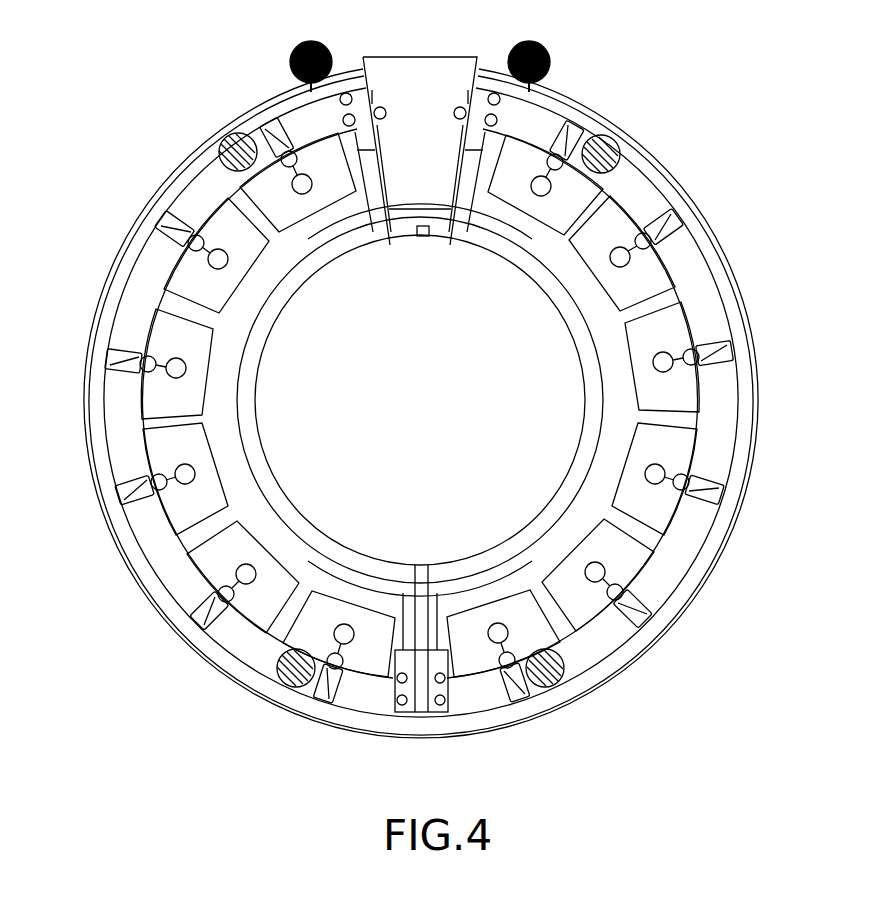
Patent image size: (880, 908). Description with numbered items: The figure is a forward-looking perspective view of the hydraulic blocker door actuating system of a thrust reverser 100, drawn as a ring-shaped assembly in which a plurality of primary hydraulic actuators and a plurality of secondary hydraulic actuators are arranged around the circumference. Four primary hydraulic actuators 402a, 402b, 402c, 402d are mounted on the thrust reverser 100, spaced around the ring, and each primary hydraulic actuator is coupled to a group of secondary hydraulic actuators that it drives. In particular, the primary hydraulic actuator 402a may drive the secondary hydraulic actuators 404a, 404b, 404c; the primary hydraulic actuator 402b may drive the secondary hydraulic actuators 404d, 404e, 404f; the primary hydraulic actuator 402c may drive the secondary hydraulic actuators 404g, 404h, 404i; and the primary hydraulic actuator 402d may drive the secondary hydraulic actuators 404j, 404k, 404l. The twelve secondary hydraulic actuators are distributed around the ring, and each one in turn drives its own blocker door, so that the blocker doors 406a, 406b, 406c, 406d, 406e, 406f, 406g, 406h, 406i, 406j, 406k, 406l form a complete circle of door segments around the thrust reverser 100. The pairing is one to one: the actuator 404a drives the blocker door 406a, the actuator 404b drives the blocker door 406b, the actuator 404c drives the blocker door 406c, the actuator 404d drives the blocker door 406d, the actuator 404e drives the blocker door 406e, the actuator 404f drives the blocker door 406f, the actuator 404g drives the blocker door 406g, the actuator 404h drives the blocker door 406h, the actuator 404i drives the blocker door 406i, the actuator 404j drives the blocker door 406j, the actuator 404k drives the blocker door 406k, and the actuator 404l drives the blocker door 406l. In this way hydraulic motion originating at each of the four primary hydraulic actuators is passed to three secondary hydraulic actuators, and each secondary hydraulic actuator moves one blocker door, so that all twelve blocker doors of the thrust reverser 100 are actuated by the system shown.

The thrust reverser 100 is at (128, 21).
The primary hydraulic actuator 402a is at (245, 138).
The primary hydraulic actuator 402b is at (297, 688).
The primary hydraulic actuator 402c is at (556, 684).
The primary hydraulic actuator 402d is at (613, 140).
The secondary hydraulic actuator 404a is at (283, 135).
The secondary hydraulic actuator 404b is at (185, 240).
The secondary hydraulic actuator 404c is at (125, 368).
The secondary hydraulic actuator 404d is at (137, 500).
The secondary hydraulic actuator 404e is at (212, 620).
The secondary hydraulic actuator 404f is at (333, 700).
The secondary hydraulic actuator 404g is at (510, 700).
The secondary hydraulic actuator 404h is at (645, 615).
The secondary hydraulic actuator 404i is at (715, 500).
The secondary hydraulic actuator 404j is at (733, 358).
The secondary hydraulic actuator 404k is at (690, 232).
The secondary hydraulic actuator 404l is at (570, 132).
The blocker door 406a is at (270, 192).
The blocker door 406b is at (183, 302).
The blocker door 406c is at (178, 412).
The blocker door 406d is at (180, 520).
The blocker door 406e is at (255, 622).
The blocker door 406f is at (367, 657).
The blocker door 406g is at (548, 640).
The blocker door 406h is at (643, 550).
The blocker door 406i is at (680, 447).
The blocker door 406j is at (678, 315).
The blocker door 406k is at (660, 195).
The blocker door 406l is at (603, 186).